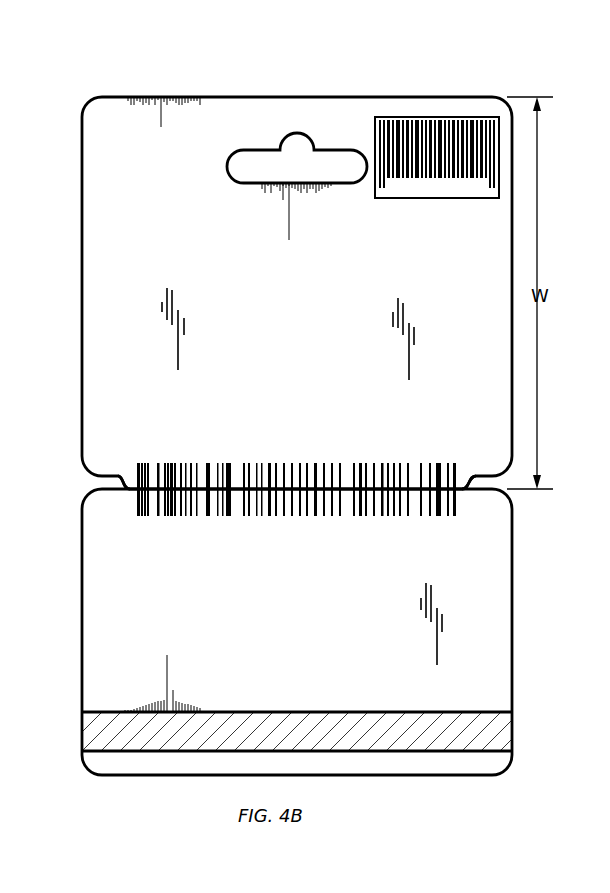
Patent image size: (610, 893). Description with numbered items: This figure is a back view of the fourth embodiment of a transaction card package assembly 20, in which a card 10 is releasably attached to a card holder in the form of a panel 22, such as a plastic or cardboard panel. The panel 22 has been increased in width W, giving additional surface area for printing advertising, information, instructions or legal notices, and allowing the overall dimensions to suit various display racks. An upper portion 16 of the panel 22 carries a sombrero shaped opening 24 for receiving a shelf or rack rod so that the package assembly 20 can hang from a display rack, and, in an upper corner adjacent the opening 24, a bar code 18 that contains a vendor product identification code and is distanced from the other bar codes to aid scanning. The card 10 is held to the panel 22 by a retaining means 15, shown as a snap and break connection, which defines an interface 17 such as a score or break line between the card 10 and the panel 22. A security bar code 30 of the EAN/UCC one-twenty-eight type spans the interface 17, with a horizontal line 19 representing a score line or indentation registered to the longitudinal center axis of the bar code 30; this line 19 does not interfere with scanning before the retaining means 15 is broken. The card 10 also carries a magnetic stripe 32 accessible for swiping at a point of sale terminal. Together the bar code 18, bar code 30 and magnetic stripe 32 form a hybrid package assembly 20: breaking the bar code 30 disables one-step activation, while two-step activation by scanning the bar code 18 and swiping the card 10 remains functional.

The card 10 is at (512, 632).
The retaining means 15 is at (128, 496).
The upper portion 16 is at (263, 293).
The interface 17 is at (462, 482).
The bar code 18 is at (437, 117).
The line 19 is at (235, 482).
The transaction card package assembly 20 is at (97, 70).
The panel 22 is at (109, 386).
The opening 24 is at (295, 143).
The bar code 30 is at (333, 510).
The magnetic stripe 32 is at (512, 735).